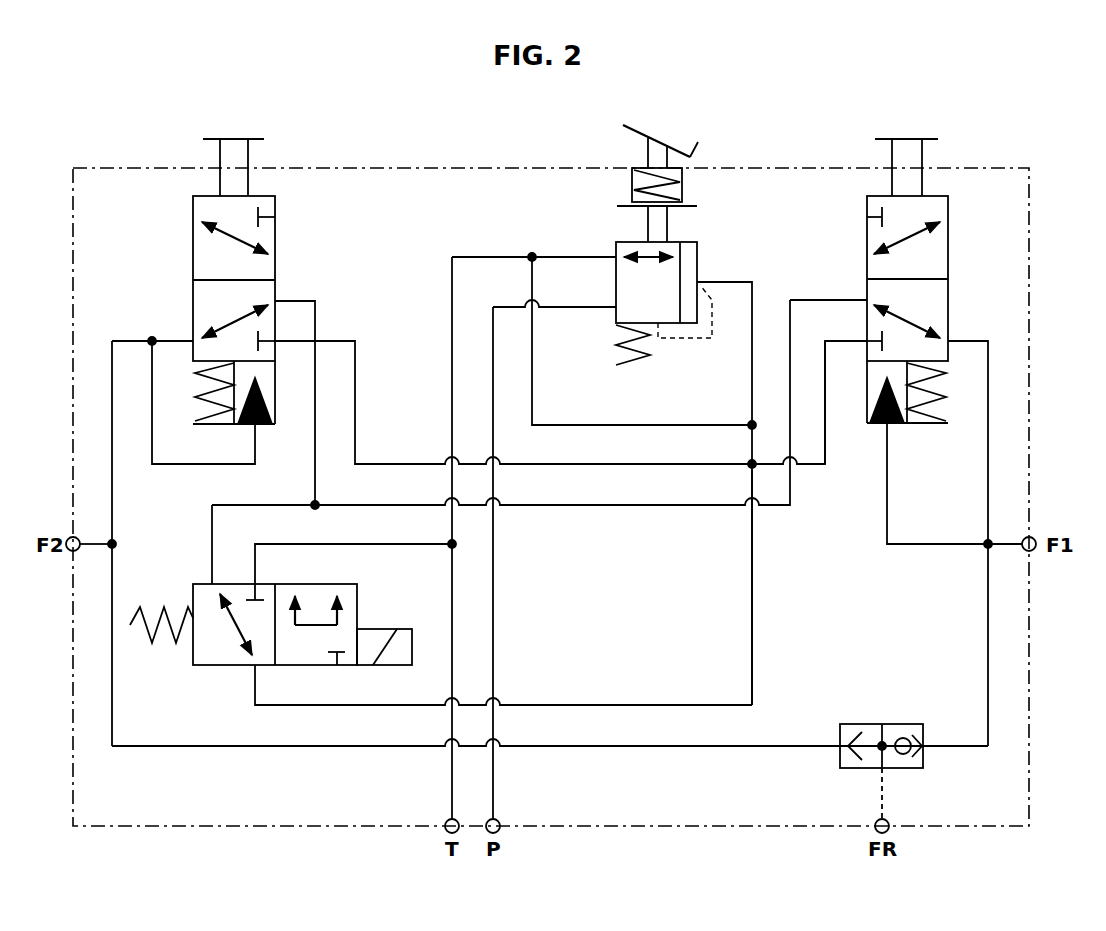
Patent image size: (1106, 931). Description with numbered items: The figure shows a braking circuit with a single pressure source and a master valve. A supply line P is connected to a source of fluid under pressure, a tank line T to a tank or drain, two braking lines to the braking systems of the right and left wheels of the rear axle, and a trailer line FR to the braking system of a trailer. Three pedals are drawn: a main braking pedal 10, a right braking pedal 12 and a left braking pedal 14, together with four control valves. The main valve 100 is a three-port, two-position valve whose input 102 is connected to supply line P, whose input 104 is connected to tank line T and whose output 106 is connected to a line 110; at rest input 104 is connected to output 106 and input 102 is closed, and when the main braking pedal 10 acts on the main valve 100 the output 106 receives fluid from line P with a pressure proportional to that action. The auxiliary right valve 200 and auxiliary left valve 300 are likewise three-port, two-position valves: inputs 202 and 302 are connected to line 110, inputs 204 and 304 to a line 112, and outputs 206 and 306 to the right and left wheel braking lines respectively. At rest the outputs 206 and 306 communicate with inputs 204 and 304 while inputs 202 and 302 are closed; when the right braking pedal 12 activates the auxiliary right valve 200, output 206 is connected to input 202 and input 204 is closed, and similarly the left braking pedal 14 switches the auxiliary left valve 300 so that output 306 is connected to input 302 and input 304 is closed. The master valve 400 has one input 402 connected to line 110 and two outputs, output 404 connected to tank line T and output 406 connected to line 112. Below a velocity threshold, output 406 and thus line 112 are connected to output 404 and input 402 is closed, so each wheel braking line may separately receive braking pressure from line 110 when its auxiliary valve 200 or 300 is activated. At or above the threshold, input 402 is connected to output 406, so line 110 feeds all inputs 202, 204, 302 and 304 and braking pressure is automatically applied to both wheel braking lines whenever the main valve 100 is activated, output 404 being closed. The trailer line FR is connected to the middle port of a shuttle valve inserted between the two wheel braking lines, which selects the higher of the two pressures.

The main braking pedal 10 is at (657, 115).
The right braking pedal 12 is at (907, 115).
The left braking pedal 14 is at (233, 116).
The main valve 100 is at (716, 232).
The input 102 is at (592, 310).
The input 104 is at (588, 255).
The output 106 is at (720, 281).
The line 110 is at (755, 595).
The line 112 is at (588, 508).
The auxiliary right valve 200 is at (967, 270).
The input 202 is at (840, 341).
The input 204 is at (832, 299).
The output 206 is at (950, 338).
The auxiliary left valve 300 is at (156, 278).
The input 302 is at (338, 338).
The input 304 is at (294, 298).
The output 306 is at (172, 338).
The master valve 400 is at (384, 605).
The input 402 is at (248, 690).
The output 404 is at (262, 580).
The output 406 is at (210, 562).